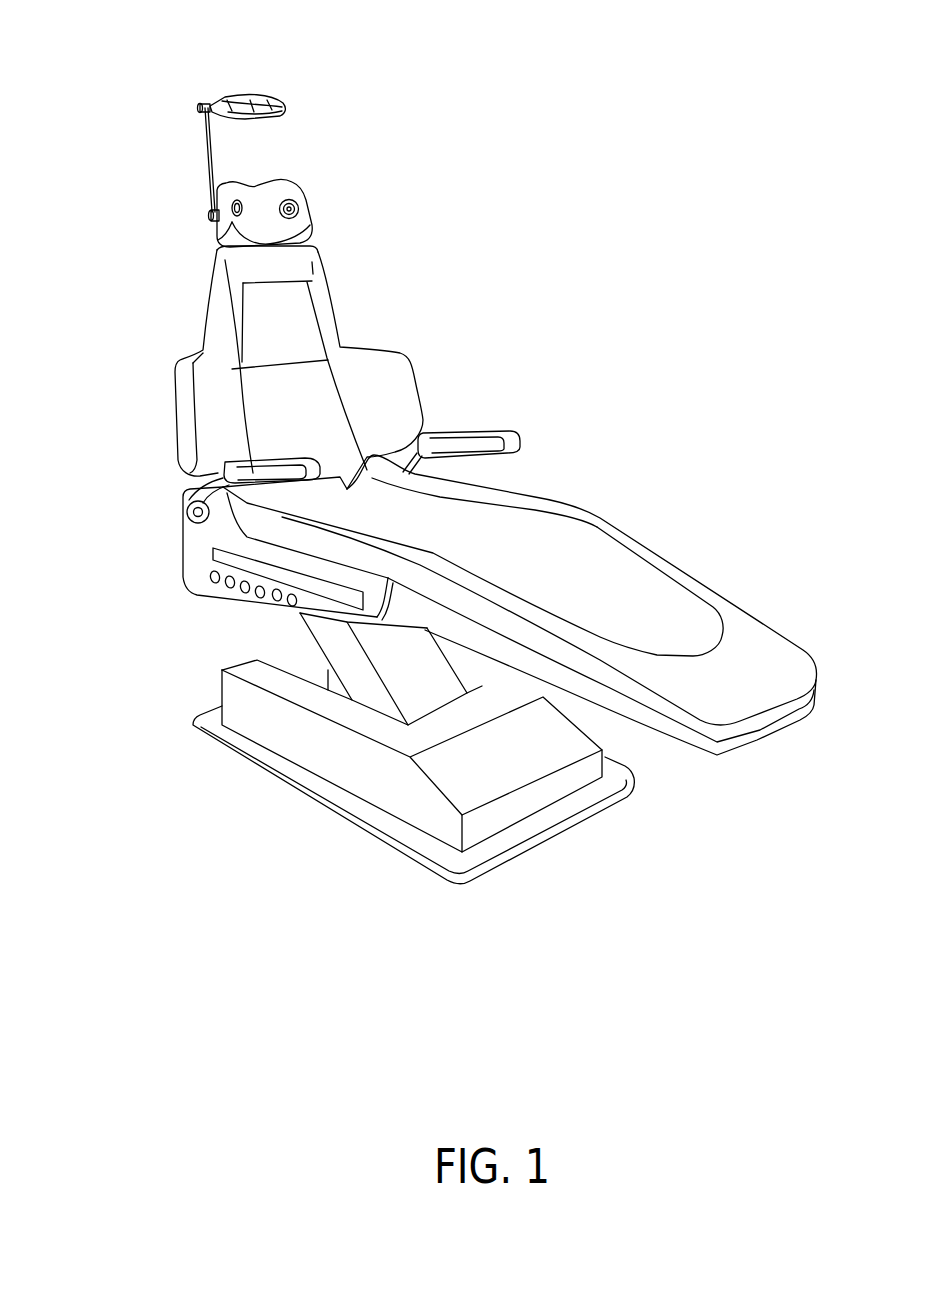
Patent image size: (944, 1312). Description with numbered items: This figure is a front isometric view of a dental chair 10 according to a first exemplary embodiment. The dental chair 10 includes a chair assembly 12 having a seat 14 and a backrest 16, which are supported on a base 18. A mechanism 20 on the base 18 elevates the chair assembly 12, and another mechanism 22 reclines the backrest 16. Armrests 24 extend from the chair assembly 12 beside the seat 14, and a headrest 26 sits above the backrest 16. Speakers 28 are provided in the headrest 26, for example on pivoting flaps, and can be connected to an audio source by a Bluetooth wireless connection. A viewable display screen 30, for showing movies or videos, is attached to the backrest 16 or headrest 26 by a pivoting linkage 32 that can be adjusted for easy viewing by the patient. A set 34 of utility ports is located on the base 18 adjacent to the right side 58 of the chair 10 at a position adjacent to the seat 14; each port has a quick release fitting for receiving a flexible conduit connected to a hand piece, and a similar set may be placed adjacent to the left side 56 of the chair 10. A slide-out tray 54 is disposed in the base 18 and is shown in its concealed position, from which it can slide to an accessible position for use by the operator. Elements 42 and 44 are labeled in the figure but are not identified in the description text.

The dental chair 10 is at (548, 173).
The chair assembly 12 is at (738, 620).
The seat 14 is at (542, 540).
The backrest 16 is at (340, 334).
The base 18 is at (313, 737).
The mechanism 20 is at (345, 662).
The mechanism 22 is at (170, 517).
The armrests 24 is at (242, 472).
The headrest 26 is at (258, 195).
The speakers 28 is at (235, 210).
The viewable display screen 30 is at (263, 99).
The pivoting linkage 32 is at (205, 155).
The set of utility ports 34 is at (200, 577).
The backrest cushion 42 is at (302, 317).
The side bolster 44 is at (204, 305).
The slide-out tray 54 is at (237, 555).
The left side 56 is at (658, 547).
The right side 58 is at (210, 590).